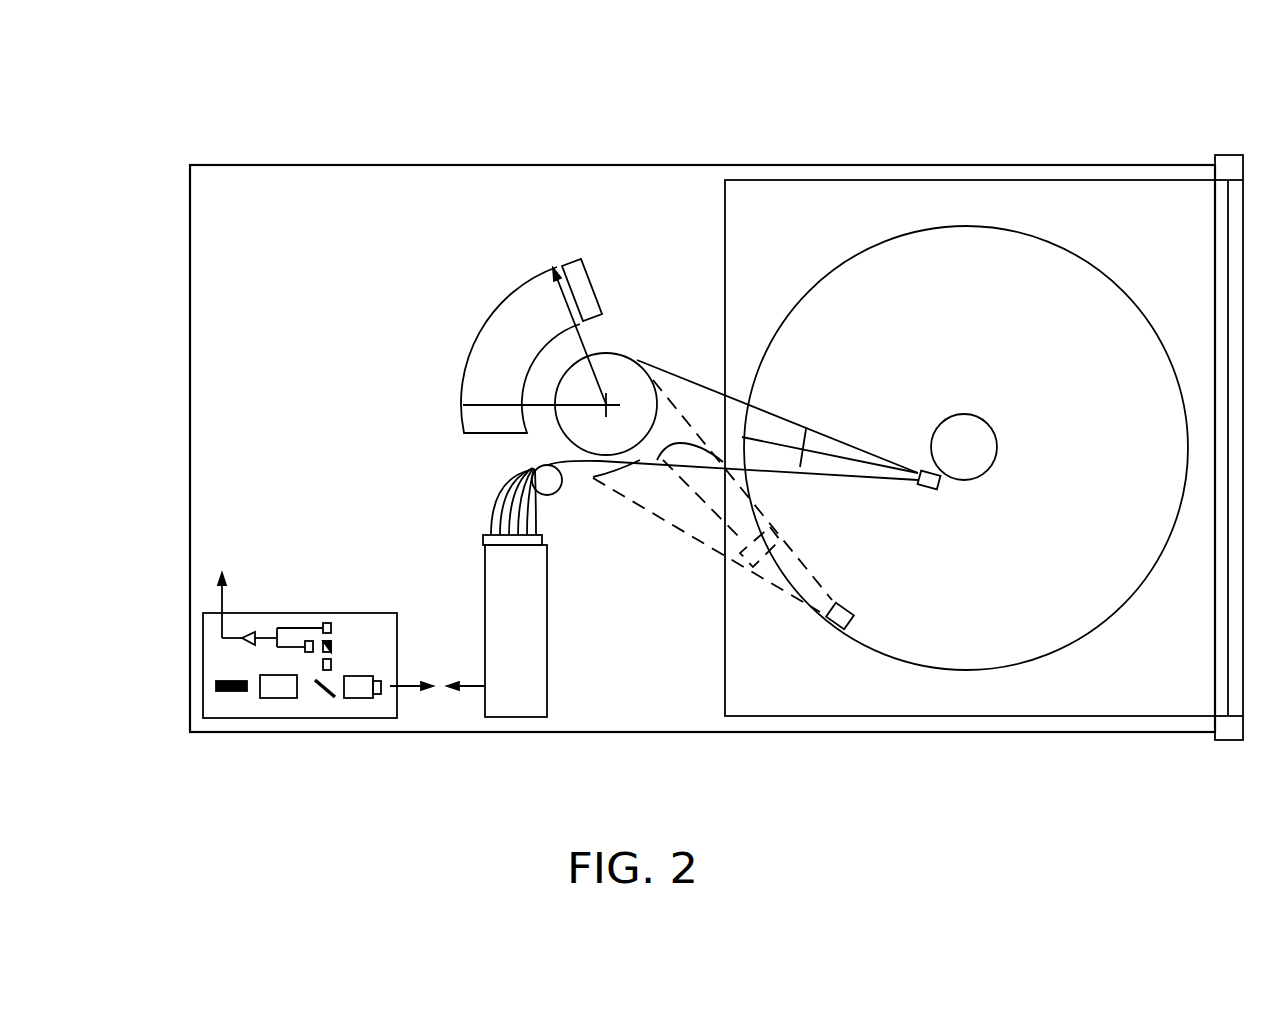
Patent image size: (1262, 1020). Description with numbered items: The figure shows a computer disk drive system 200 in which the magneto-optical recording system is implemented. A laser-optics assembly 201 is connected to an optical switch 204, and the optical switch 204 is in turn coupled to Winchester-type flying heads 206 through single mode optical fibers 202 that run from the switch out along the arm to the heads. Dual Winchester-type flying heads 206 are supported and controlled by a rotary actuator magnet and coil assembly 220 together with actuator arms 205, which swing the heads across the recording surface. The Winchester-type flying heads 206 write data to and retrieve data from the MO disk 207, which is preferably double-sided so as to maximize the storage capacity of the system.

The disk drive system 200 is at (923, 118).
The laser-optics assembly 201 is at (265, 700).
The single mode optical fibers 202 is at (495, 493).
The optical switch 204 is at (552, 597).
The actuator arms 205 is at (788, 435).
The Winchester-type flying heads 206 is at (937, 502).
The MO disk 207 is at (1032, 233).
The rotary actuator magnet and coil assembly 220 is at (558, 262).